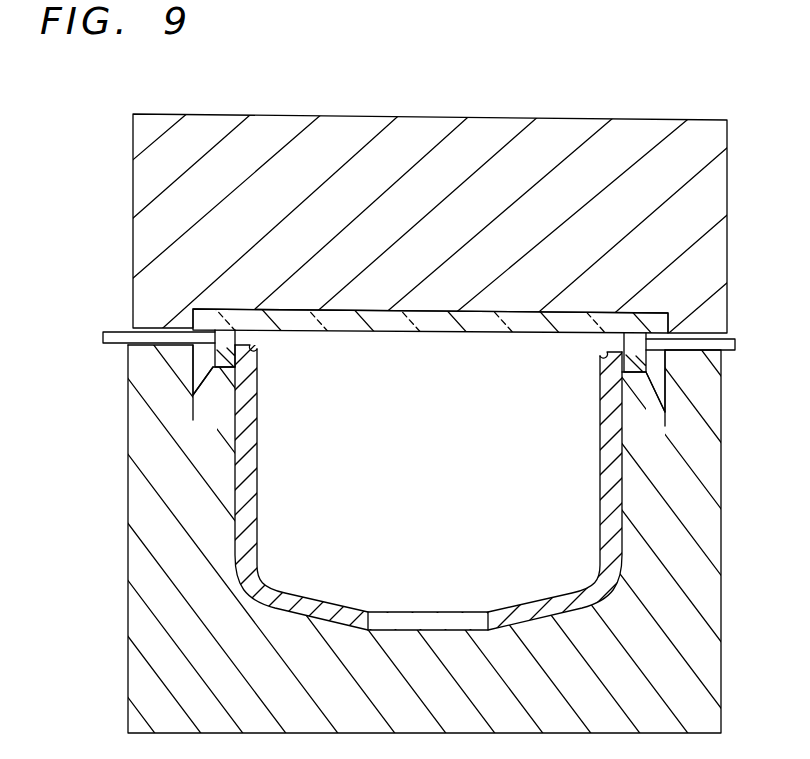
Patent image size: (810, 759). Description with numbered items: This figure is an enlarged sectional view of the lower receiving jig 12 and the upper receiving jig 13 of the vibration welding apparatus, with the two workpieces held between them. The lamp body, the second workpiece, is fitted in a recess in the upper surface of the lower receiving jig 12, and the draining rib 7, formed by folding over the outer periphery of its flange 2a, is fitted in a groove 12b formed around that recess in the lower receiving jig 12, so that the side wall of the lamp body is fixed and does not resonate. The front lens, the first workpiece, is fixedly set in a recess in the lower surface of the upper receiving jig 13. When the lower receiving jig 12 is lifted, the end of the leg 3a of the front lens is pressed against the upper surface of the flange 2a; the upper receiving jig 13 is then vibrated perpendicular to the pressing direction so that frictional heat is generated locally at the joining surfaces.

The upper receiving jig 13 is at (727, 197).
The lower receiving jig 12 is at (721, 556).
The groove 12b is at (197, 372).
The draining rib 7 is at (205, 389).
The leg 3a is at (421, 341).
The flange 2a is at (261, 344).